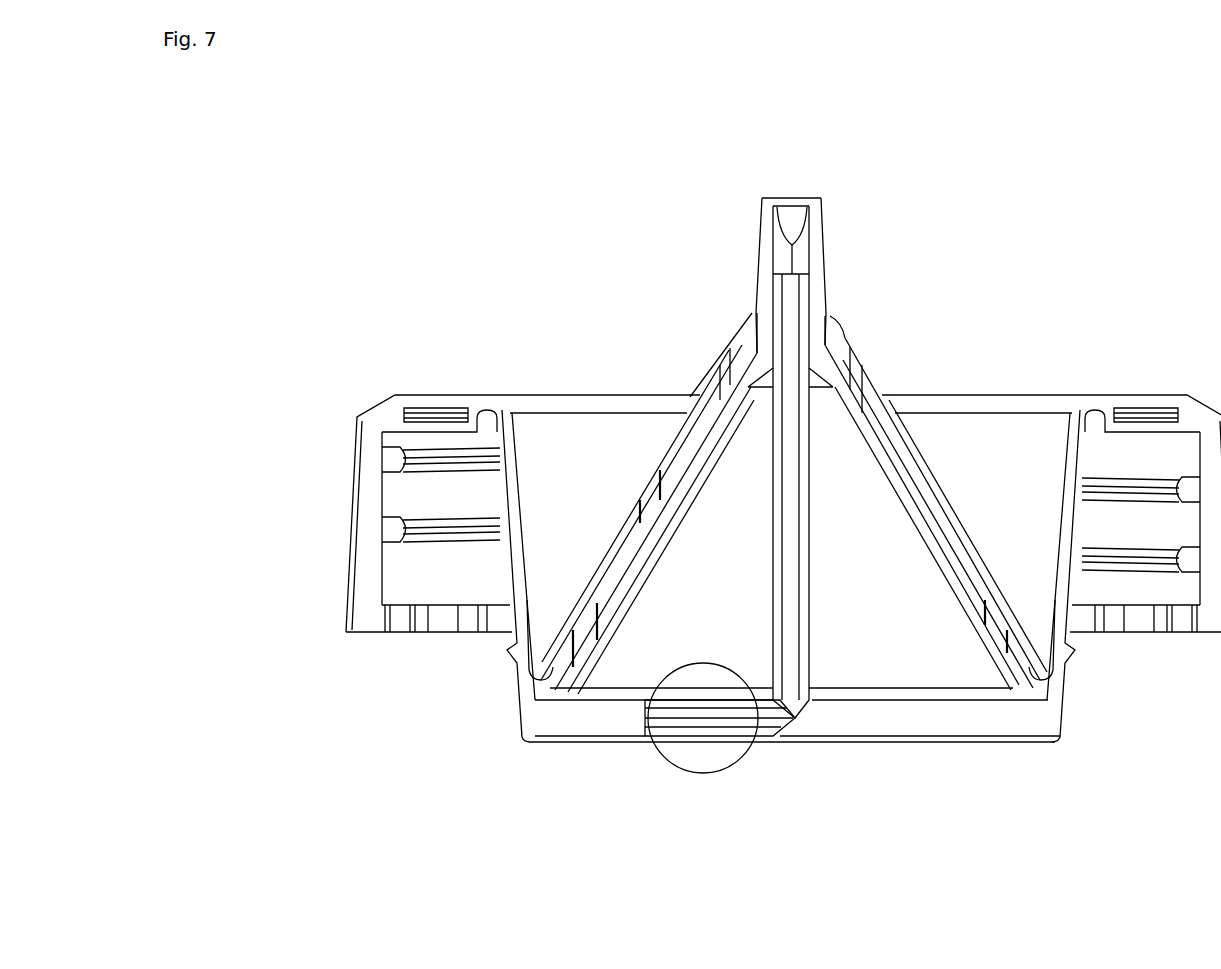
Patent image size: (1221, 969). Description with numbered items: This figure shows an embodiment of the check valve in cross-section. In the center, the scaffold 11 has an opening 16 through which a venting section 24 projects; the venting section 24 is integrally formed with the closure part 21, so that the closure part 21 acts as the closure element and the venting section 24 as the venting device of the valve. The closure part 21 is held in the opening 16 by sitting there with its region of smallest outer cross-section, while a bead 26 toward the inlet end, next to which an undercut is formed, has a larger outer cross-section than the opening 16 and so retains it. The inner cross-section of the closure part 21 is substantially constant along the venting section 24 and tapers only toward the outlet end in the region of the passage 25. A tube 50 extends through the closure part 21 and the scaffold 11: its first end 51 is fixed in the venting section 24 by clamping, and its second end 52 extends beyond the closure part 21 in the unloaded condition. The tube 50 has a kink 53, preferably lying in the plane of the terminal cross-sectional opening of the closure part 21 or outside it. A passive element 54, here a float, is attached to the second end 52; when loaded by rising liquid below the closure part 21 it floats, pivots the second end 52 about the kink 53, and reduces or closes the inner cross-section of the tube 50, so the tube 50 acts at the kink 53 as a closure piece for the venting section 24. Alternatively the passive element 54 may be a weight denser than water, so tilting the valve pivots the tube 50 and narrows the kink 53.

The scaffold 11 is at (883, 402).
The opening 16 is at (835, 334).
The closure part 21 is at (890, 456).
The venting section 24 is at (826, 283).
The passage 25 is at (799, 199).
The bead 26 is at (743, 305).
The tube 50 is at (772, 432).
The first end 51 is at (774, 306).
The second end 52 is at (653, 735).
The kink 53 is at (807, 727).
The passive element 54 is at (714, 765).